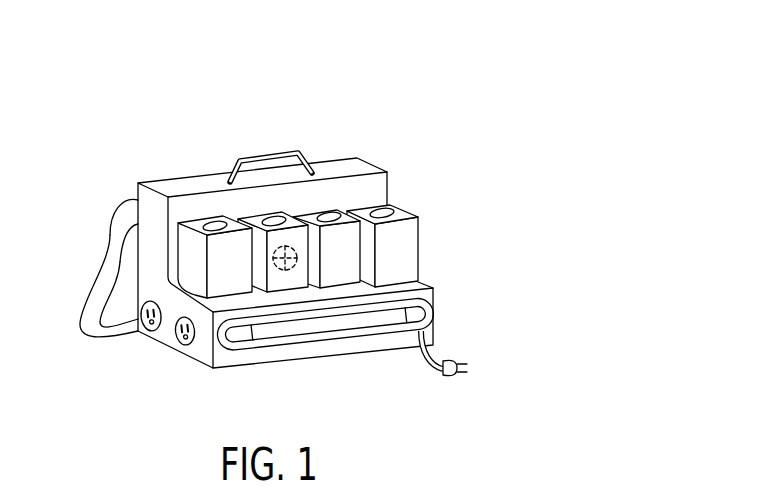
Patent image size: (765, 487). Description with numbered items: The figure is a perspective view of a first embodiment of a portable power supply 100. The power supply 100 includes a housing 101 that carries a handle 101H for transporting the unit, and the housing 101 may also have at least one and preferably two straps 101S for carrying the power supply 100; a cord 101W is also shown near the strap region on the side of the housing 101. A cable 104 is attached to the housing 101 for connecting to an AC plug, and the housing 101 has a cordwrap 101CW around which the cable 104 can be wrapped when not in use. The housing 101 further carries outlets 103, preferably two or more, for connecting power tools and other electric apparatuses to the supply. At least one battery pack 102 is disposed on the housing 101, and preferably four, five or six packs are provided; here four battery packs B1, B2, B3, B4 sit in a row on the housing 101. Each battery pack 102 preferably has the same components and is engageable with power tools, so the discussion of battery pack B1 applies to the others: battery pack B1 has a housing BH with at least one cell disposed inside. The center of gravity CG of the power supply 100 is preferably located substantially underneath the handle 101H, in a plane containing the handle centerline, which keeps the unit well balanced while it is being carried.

The portable power supply 100 is at (324, 68).
The housing 101 is at (152, 198).
The handle 101H is at (303, 148).
The strap 101S is at (128, 222).
The power cord 101W is at (133, 306).
The cordwrap 101CW is at (240, 343).
The battery pack 102 is at (415, 226).
The outlet 103 is at (148, 337).
The cable 104 is at (437, 375).
The battery pack B1 is at (408, 265).
The battery pack B2 is at (334, 228).
The battery pack B3 is at (268, 240).
The battery pack B4 is at (192, 237).
The battery pack housing BH is at (414, 239).
The center of gravity CG is at (284, 272).